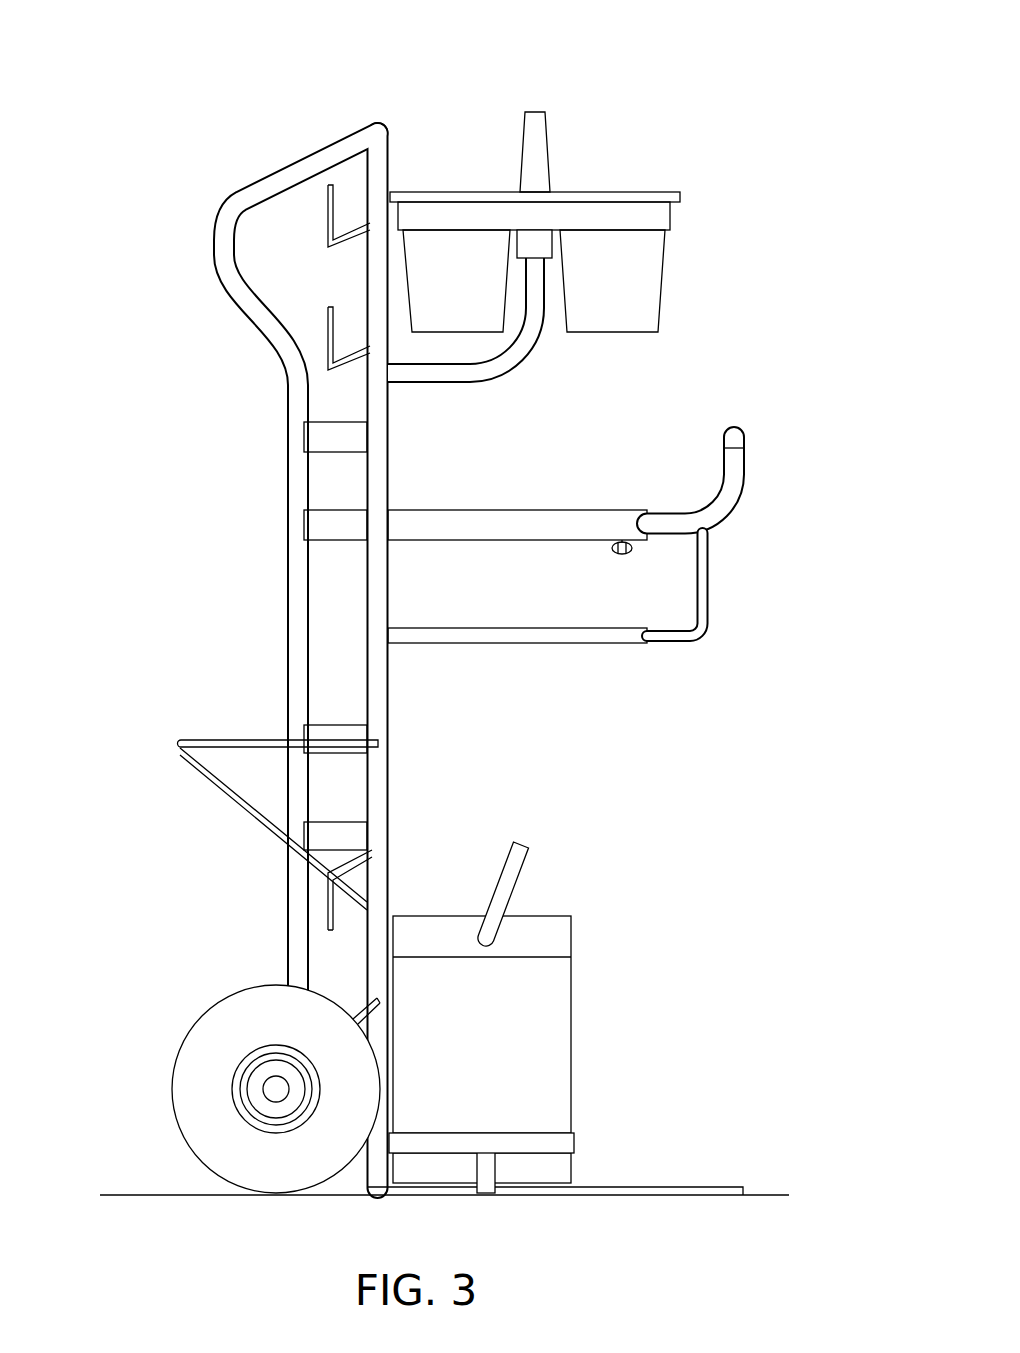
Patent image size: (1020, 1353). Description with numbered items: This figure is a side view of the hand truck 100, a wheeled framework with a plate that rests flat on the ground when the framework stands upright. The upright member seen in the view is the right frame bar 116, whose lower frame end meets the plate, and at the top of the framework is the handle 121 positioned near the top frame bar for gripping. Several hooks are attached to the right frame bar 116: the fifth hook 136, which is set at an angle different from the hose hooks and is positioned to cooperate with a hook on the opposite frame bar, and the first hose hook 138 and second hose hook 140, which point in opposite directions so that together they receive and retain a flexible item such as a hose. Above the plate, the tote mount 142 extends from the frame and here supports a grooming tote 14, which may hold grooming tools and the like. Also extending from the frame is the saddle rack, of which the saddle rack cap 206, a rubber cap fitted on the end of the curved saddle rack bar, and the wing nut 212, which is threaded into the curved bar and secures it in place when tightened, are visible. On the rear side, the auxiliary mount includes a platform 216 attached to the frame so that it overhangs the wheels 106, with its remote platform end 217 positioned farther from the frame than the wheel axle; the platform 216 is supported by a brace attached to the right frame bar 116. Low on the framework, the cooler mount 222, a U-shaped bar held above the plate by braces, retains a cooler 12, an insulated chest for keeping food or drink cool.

The hand truck 100 is at (466, 597).
The cooler 12 is at (571, 1022).
The tote 14 is at (660, 282).
The wheels 106 is at (172, 1090).
The right frame bar 116 is at (375, 697).
The handle 121 is at (222, 220).
The fifth hook 136 is at (327, 197).
The first hose hook 138 is at (340, 325).
The second hose hook 140 is at (327, 912).
The tote mount 142 is at (518, 363).
The saddle rack cap 206 is at (735, 432).
The wing nut 212 is at (630, 550).
The platform 216 is at (237, 745).
The remote platform end 217 is at (177, 745).
The cooler mount 222 is at (574, 1140).